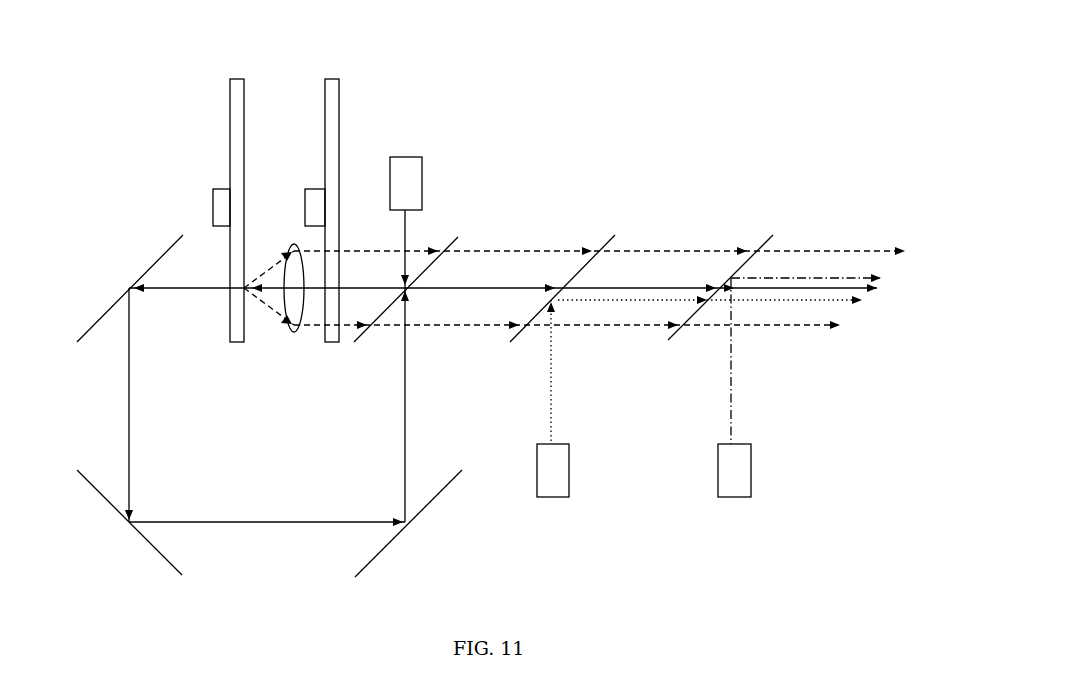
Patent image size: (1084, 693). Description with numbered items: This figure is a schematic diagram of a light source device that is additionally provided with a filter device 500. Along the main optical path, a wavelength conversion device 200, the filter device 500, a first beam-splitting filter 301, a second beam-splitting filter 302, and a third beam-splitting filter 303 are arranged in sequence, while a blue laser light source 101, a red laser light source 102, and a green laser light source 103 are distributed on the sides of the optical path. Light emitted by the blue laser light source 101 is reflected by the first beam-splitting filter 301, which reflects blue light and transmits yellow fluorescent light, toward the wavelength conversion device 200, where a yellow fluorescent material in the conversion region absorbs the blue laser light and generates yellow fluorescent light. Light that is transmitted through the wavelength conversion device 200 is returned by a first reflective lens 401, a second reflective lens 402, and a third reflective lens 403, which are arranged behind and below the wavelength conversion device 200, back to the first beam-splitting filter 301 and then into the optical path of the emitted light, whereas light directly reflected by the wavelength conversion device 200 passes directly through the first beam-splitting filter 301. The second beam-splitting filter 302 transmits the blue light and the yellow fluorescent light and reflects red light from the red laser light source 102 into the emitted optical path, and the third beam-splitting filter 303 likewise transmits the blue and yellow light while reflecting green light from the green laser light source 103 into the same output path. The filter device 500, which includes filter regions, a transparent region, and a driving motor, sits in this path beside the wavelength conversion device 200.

The wavelength conversion device 200 is at (236, 105).
The filter device 500 is at (333, 78).
The blue laser light source 101 is at (407, 172).
The red laser light source 102 is at (552, 490).
The green laser light source 103 is at (742, 490).
The first beam-splitting filter 301 is at (452, 240).
The second beam-splitting filter 302 is at (603, 235).
The third beam-splitting filter 303 is at (748, 240).
The first reflective lens 401 is at (105, 305).
The second reflective lens 402 is at (122, 497).
The third reflective lens 403 is at (392, 538).